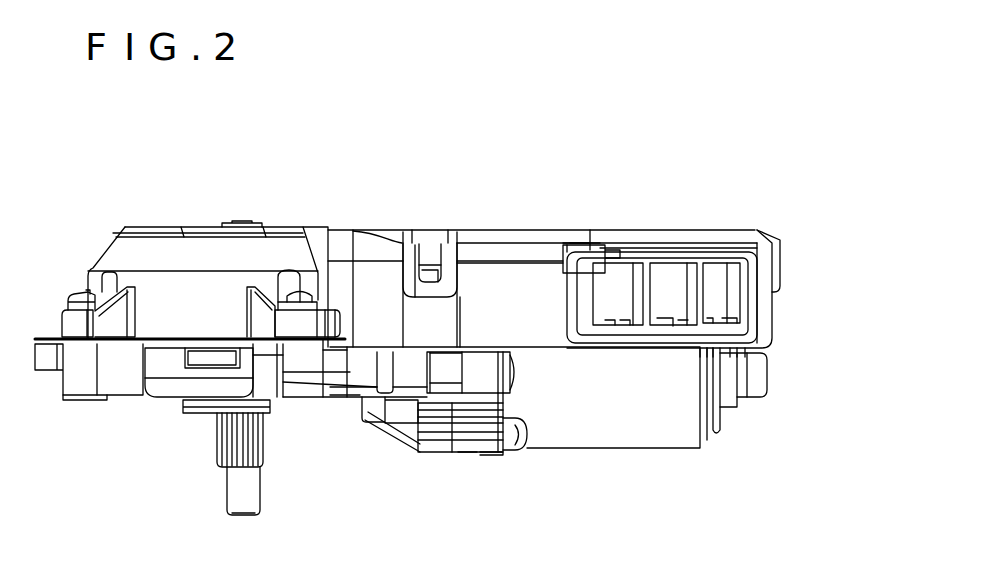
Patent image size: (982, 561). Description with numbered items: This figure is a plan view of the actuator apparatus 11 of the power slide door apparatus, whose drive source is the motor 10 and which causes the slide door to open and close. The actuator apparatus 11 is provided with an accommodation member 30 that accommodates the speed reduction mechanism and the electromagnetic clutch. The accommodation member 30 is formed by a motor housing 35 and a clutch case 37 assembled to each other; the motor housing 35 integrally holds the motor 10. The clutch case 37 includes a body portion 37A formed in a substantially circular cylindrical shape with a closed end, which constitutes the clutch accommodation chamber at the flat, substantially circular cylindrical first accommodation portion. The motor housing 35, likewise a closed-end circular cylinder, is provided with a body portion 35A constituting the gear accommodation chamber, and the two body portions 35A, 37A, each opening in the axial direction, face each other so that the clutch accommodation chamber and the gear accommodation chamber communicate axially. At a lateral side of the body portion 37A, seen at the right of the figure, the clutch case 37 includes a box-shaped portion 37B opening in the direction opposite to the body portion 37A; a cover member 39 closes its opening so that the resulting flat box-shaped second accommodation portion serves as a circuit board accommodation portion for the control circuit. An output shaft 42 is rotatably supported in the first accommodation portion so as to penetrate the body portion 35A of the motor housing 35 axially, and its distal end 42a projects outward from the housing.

The actuator apparatus 11 is at (124, 152).
The accommodation member 30 is at (434, 331).
The clutch case 37 is at (138, 227).
The body portion 37A is at (244, 238).
The cover member 39 is at (752, 232).
The box-shaped portion 37B is at (556, 333).
The motor housing 35 is at (62, 400).
The body portion 35A is at (135, 392).
The output shaft 42 is at (262, 494).
The distal end 42a is at (243, 491).
The motor 10 is at (703, 448).